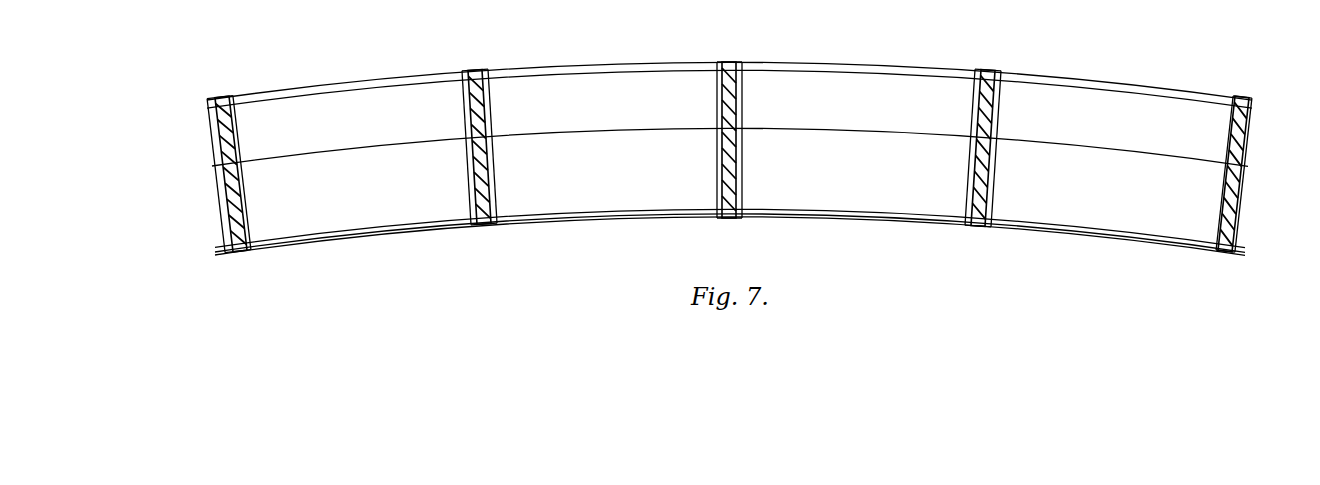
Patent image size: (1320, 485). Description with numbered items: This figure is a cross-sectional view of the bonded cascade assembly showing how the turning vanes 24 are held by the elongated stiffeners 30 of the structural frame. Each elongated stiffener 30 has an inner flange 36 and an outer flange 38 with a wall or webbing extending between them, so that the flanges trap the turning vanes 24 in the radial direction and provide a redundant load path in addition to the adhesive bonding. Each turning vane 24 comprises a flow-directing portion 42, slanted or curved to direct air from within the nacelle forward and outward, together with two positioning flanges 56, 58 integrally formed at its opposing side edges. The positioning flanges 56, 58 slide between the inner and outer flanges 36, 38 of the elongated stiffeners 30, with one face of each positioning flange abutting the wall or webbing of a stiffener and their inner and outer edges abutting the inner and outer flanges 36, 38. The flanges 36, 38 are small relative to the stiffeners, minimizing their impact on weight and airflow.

The turning vane 24 is at (376, 238).
The elongated stiffener 30 is at (226, 158).
The inner flange 36 is at (246, 252).
The outer flange 38 is at (225, 101).
The flow-directing portion 42 is at (350, 102).
The positioning flange 56 is at (468, 114).
The positioning flange 58 is at (233, 147).